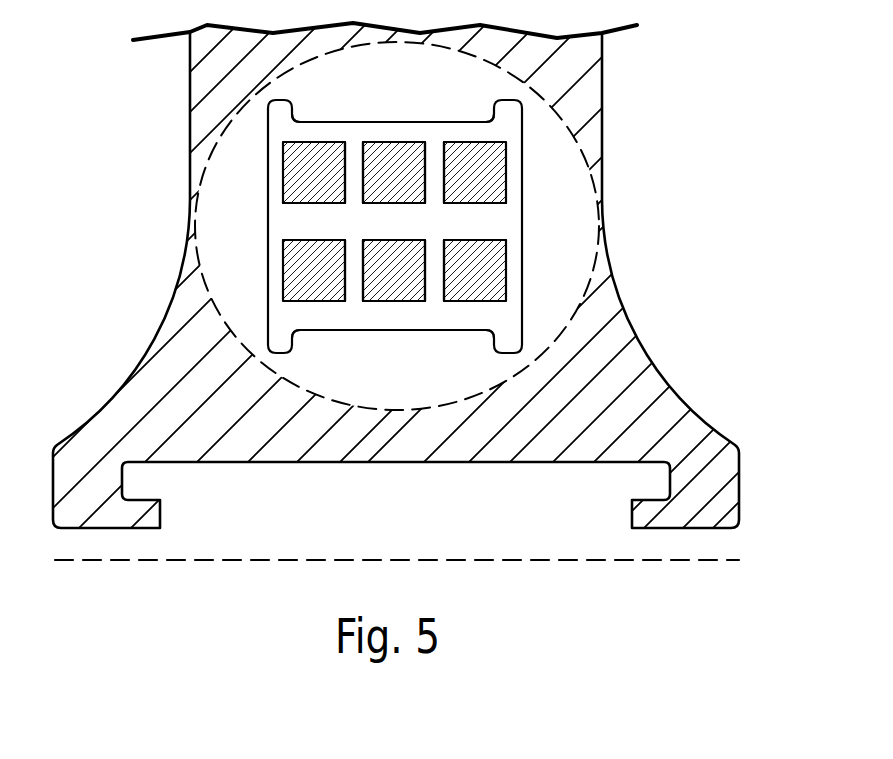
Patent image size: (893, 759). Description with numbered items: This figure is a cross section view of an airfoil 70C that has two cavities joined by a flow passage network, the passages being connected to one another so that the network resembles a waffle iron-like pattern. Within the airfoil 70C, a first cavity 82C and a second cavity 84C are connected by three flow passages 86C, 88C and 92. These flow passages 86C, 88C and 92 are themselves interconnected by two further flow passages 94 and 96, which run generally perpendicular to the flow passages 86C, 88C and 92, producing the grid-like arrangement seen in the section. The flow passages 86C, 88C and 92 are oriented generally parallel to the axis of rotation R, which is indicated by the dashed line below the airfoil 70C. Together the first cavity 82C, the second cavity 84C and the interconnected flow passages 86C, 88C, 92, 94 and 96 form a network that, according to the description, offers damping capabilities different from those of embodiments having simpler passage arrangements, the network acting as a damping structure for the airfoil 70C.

The airfoil 70C is at (689, 100).
The first cavity 82C is at (232, 186).
The second cavity 84C is at (511, 181).
The flow passage 86C is at (399, 133).
The flow passage 88C is at (388, 316).
The flow passage 92 is at (486, 227).
The flow passage 94 is at (355, 279).
The flow passage 96 is at (436, 289).
The axis of rotation R is at (677, 562).